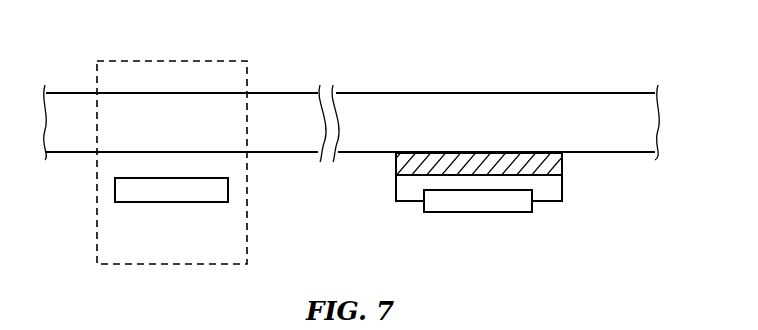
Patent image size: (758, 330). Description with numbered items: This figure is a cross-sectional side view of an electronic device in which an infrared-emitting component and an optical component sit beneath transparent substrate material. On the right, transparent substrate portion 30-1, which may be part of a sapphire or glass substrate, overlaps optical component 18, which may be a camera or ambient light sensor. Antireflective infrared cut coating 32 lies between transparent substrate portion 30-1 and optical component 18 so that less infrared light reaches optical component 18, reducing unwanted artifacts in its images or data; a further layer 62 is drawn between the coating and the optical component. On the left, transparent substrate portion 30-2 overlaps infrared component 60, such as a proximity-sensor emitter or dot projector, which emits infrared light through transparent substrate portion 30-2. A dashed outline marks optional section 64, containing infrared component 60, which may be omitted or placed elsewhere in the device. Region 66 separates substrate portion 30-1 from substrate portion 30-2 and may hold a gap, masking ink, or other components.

The transparent substrate portion 30-1 is at (583, 103).
The transparent substrate portion 30-2 is at (72, 102).
The region 66 is at (327, 72).
The optional section 64 is at (186, 57).
The infrared component 60 is at (165, 203).
The antireflective infrared cut coating 32 is at (563, 162).
The layer 62 is at (563, 188).
The optical component 18 is at (468, 213).